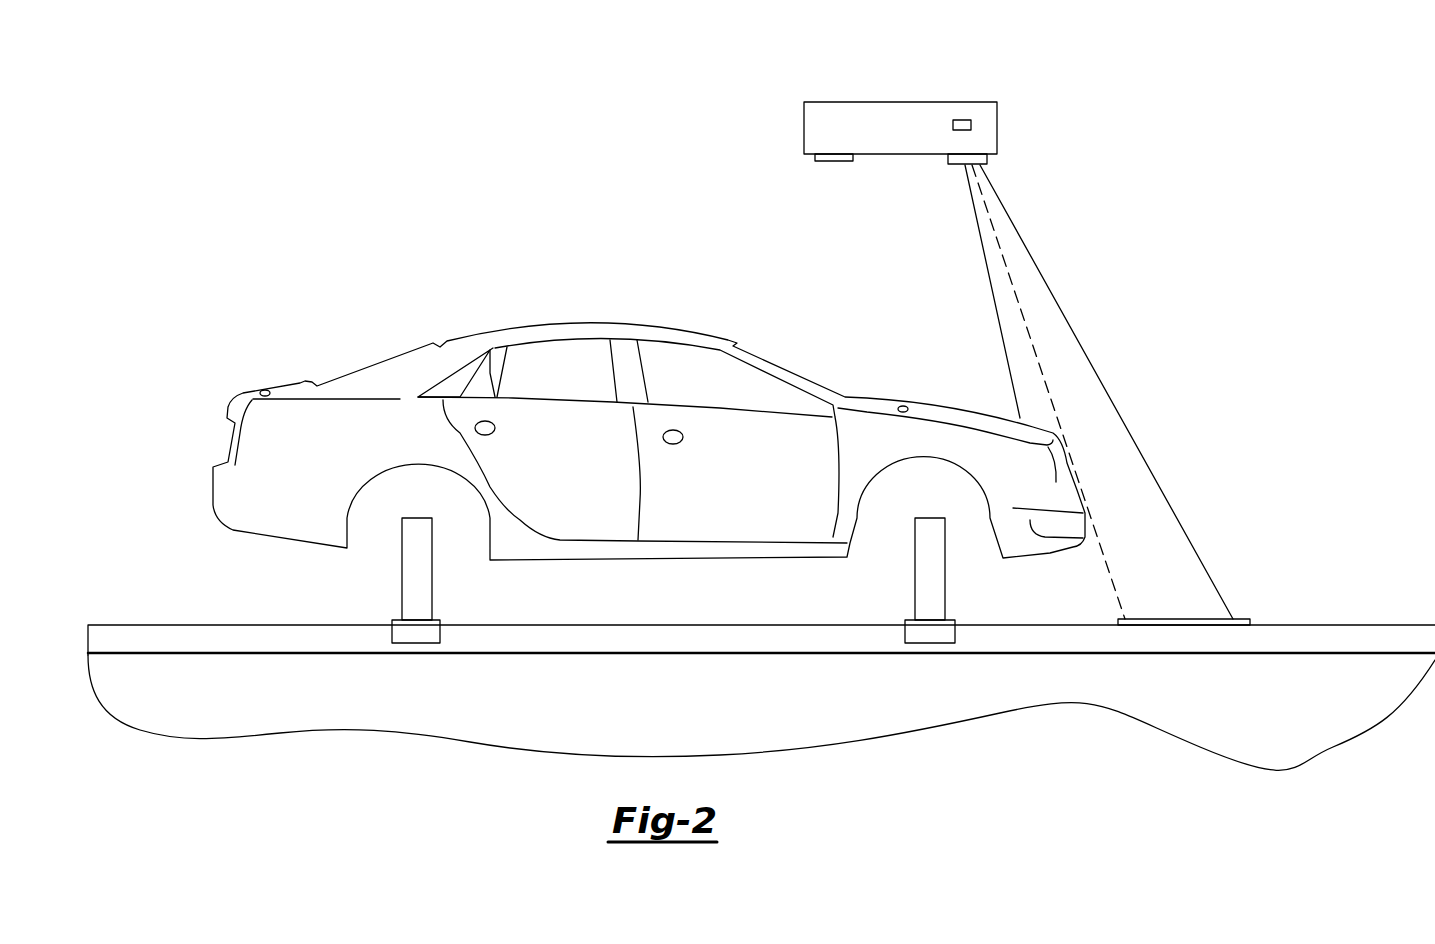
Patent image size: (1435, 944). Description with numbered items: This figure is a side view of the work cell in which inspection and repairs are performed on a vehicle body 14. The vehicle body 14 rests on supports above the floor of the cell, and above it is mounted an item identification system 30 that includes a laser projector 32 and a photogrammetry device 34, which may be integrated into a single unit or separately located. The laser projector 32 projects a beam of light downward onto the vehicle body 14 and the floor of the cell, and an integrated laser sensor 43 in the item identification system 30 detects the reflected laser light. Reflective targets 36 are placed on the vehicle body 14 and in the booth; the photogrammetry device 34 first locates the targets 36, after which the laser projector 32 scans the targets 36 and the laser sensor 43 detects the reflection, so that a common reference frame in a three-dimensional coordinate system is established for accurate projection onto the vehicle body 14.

The vehicle body 14 is at (530, 292).
The item identification system 30 is at (997, 122).
The laser projector 32 is at (858, 102).
The photogrammetry device 34 is at (828, 162).
The reflective target 36 is at (265, 390).
The integrated laser sensor 43 is at (960, 120).